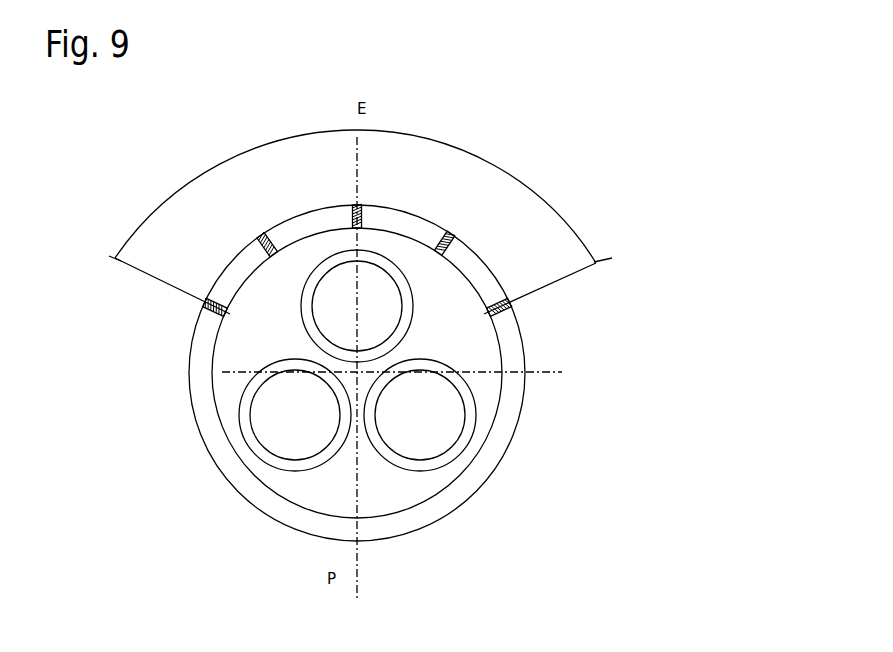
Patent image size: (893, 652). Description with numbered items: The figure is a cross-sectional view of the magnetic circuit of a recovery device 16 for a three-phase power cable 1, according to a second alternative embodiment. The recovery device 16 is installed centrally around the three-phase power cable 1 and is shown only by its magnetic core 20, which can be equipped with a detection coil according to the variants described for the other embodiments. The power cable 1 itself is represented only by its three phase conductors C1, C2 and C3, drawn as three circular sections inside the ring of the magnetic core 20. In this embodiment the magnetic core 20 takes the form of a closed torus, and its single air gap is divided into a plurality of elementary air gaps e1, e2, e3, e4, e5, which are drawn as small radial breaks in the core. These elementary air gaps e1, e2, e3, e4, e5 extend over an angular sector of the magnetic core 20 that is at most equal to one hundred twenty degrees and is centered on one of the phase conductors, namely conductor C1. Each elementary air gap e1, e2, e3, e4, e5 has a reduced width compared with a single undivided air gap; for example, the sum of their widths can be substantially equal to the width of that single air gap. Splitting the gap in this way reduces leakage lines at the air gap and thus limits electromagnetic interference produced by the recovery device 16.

The three-phase power cable 1 is at (234, 448).
The recovery device 16 is at (636, 280).
The magnetic core 20 is at (198, 386).
The phase conductor C1 is at (357, 306).
The phase conductor C2 is at (295, 415).
The phase conductor C3 is at (420, 415).
The elementary air gap e1 is at (216, 300).
The elementary air gap e2 is at (258, 240).
The elementary air gap e3 is at (352, 212).
The elementary air gap e4 is at (442, 233).
The elementary air gap e5 is at (498, 296).